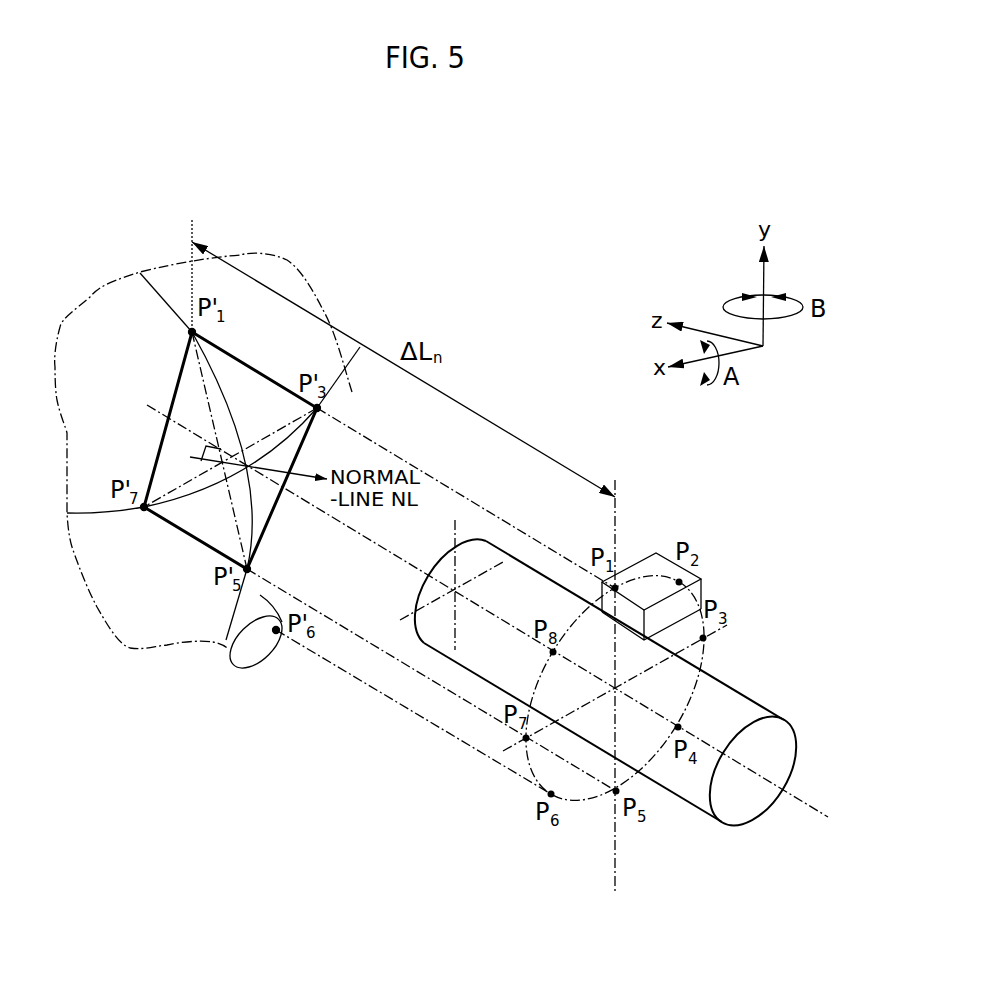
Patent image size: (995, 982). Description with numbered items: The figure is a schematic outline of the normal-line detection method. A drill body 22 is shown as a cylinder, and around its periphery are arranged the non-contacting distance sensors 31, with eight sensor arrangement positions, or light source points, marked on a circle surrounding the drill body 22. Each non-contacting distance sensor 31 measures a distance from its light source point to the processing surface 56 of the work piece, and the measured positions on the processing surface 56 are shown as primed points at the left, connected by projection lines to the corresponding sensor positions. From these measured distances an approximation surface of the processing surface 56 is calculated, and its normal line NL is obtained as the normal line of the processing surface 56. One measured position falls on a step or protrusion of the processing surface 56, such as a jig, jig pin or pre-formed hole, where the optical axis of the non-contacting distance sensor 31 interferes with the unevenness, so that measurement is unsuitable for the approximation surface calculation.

The processing surface 56 is at (297, 278).
The drill body 22 is at (732, 700).
The non-contacting distance sensor 31 is at (656, 553).